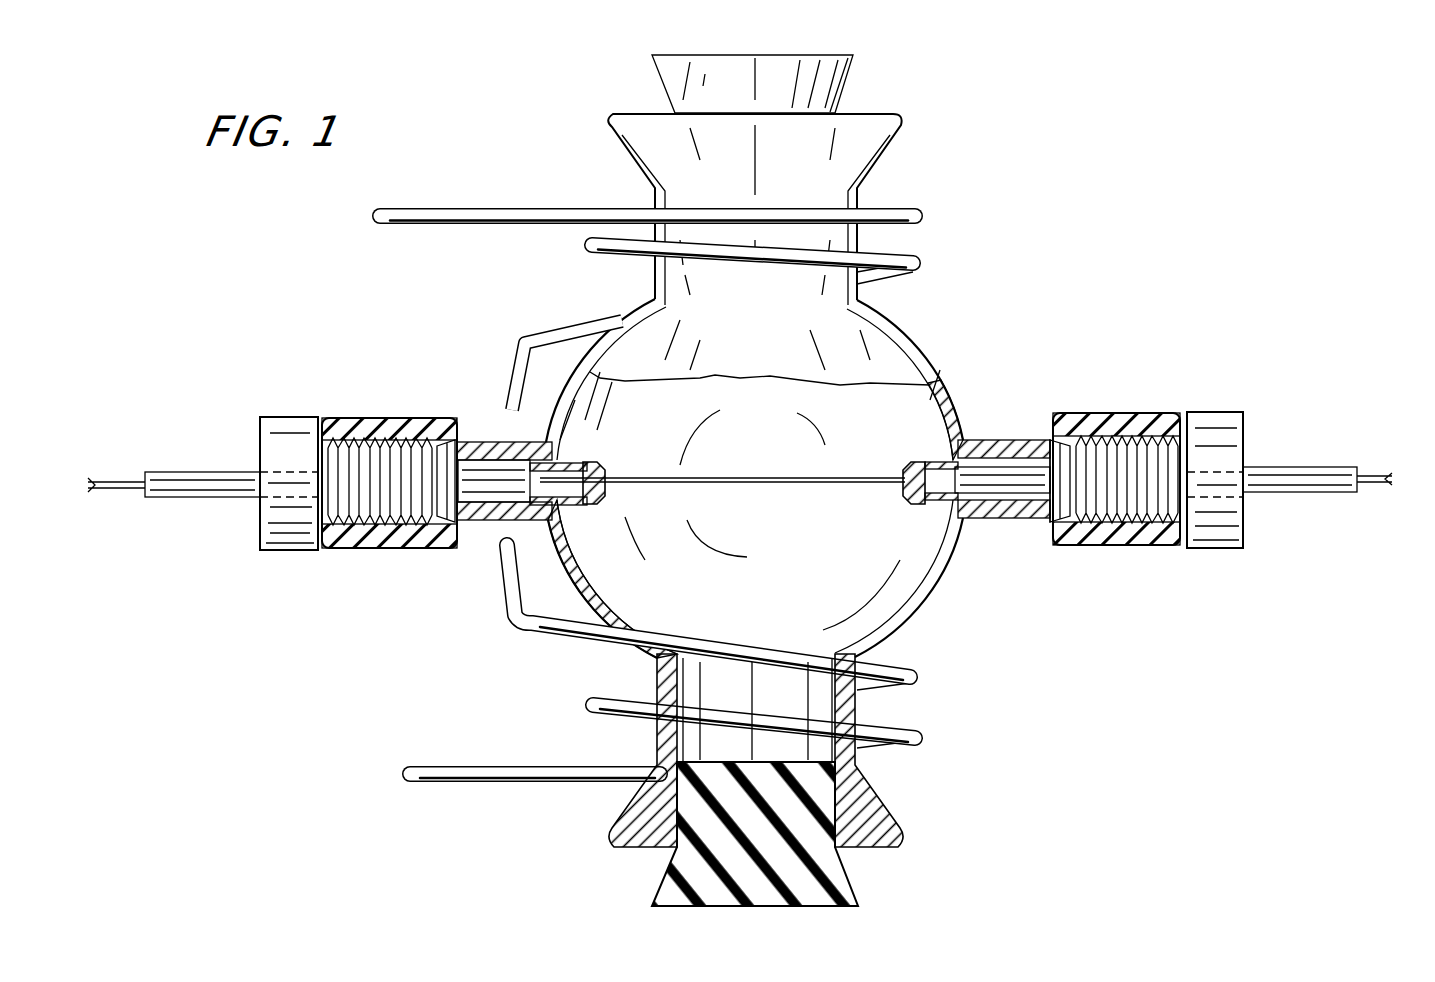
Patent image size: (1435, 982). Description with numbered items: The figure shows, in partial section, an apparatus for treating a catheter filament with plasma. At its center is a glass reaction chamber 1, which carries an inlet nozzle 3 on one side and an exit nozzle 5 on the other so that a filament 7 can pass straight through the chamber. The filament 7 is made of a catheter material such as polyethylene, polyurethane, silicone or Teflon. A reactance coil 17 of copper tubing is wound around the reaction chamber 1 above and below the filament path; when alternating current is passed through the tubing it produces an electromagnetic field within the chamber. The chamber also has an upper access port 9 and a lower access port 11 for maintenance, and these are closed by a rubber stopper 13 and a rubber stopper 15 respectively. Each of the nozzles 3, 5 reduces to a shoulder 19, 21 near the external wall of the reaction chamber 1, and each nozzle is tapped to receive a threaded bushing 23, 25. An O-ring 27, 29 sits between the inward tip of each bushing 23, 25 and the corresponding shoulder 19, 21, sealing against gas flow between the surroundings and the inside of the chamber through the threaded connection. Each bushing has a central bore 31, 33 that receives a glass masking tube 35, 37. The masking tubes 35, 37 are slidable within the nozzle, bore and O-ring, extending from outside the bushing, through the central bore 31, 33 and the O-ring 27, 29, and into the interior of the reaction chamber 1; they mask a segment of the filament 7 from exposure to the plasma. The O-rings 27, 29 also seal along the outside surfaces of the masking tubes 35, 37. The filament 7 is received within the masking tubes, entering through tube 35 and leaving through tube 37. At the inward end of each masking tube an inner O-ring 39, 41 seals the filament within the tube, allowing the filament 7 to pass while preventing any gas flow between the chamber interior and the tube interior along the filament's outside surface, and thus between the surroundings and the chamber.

The reaction chamber 1 is at (945, 365).
The inlet nozzle 3 is at (1130, 413).
The exit nozzle 5 is at (388, 418).
The filament 7 is at (940, 427).
The access port 9 is at (886, 154).
The access port 11 is at (902, 797).
The rubber stopper 13 is at (848, 73).
The rubber stopper 15 is at (822, 878).
The reactance coil 17 is at (918, 684).
The shoulder 19 is at (1043, 513).
The shoulder 21 is at (462, 523).
The bushing 23 is at (1207, 550).
The bushing 25 is at (297, 552).
The O-ring 27 is at (1047, 440).
The O-ring 29 is at (458, 432).
The central bore 31 is at (1213, 480).
The central bore 33 is at (280, 483).
The glass masking tube 35 is at (1292, 463).
The glass masking tube 37 is at (207, 498).
The inner O-ring 39 is at (606, 478).
The inner O-ring 41 is at (890, 503).